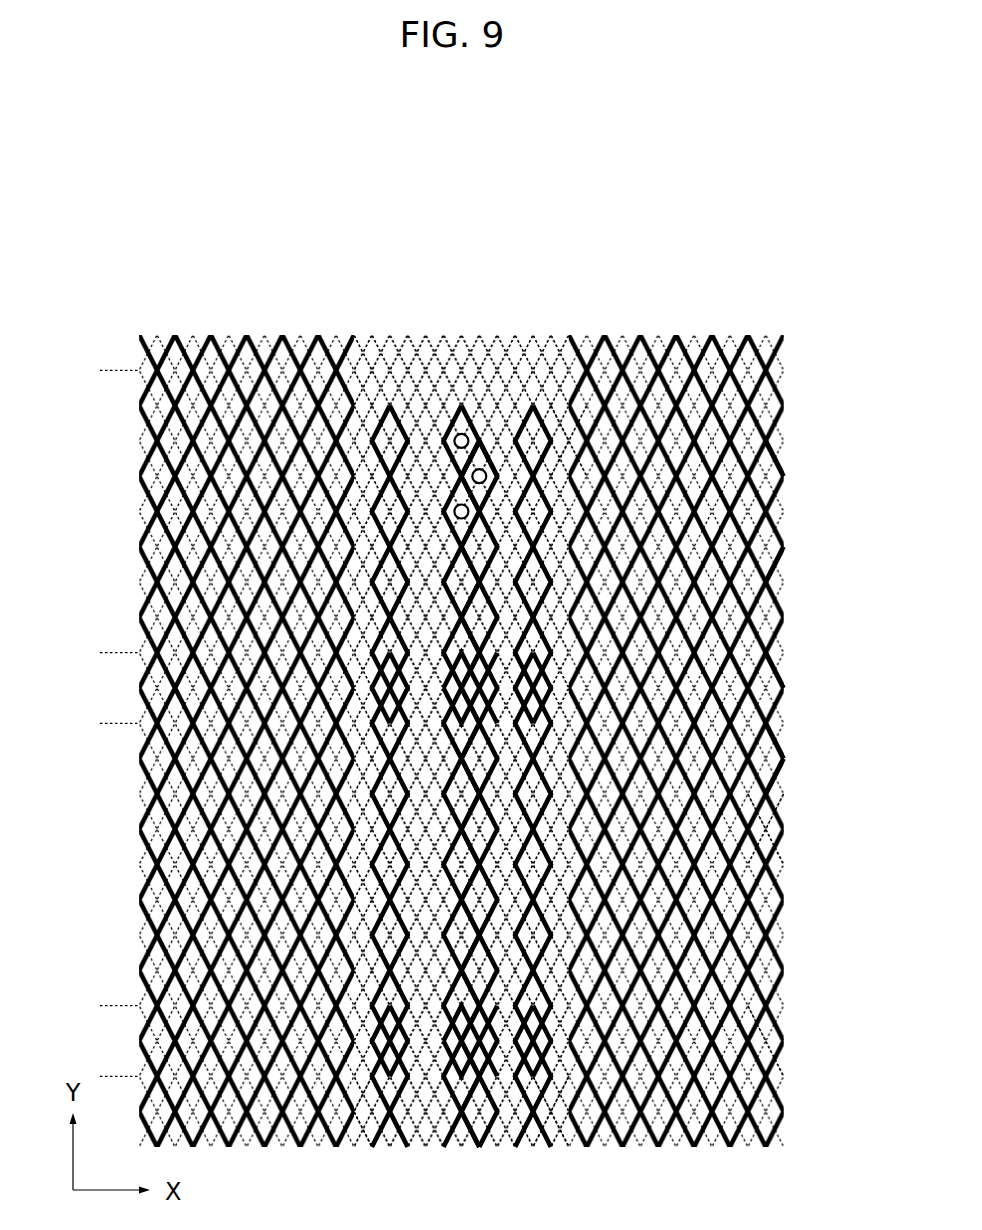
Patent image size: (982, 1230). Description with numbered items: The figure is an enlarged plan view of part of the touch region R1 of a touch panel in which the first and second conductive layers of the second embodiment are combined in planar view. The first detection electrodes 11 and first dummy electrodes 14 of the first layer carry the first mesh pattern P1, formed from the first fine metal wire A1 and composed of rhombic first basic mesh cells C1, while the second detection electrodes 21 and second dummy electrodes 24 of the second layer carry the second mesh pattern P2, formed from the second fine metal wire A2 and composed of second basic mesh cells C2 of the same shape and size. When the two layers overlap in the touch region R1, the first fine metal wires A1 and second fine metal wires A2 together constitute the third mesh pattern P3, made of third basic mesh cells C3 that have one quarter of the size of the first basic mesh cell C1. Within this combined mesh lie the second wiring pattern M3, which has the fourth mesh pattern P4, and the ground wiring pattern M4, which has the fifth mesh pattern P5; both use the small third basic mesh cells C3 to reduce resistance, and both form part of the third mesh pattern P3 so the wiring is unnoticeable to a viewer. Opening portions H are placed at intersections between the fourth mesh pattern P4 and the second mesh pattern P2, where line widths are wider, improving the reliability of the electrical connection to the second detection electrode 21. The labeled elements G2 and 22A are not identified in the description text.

The first detection electrode 11 is at (139, 335).
The first dummy electrode 14 is at (354, 335).
The second detection electrode 21 is at (118, 653).
The second dummy electrode 24 is at (118, 653).
The touch region R1 is at (797, 356).
The opening portion H is at (454, 436).
The second wiring pattern M3 is at (484, 438).
The ground wiring pattern M4 is at (569, 436).
The first mesh pattern P1 is at (783, 468).
The second mesh pattern P2 is at (782, 574).
The third mesh pattern P3 is at (782, 677).
The first fine metal wire A1 is at (780, 748).
The second fine metal wire A2 is at (780, 788).
The first basic mesh cell C1 is at (773, 830).
The second basic mesh cell C2 is at (773, 867).
The third basic mesh cell C3 is at (773, 1040).
The line group G2 is at (395, 1128).
The electrode portion 22A is at (468, 1128).
The fifth mesh pattern P5 is at (355, 1120).
The fourth mesh pattern P4 is at (552, 1110).